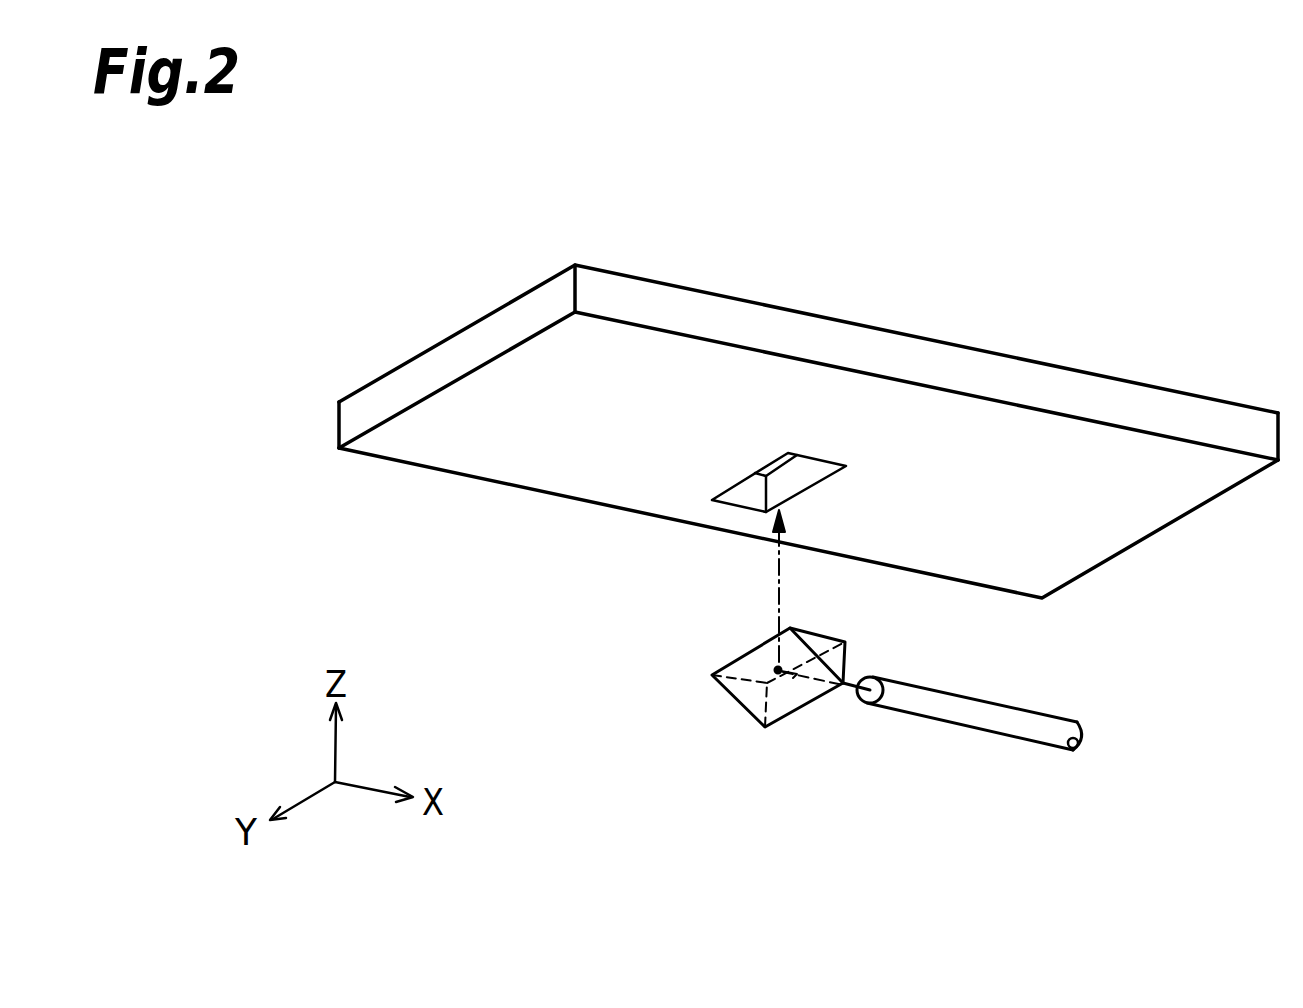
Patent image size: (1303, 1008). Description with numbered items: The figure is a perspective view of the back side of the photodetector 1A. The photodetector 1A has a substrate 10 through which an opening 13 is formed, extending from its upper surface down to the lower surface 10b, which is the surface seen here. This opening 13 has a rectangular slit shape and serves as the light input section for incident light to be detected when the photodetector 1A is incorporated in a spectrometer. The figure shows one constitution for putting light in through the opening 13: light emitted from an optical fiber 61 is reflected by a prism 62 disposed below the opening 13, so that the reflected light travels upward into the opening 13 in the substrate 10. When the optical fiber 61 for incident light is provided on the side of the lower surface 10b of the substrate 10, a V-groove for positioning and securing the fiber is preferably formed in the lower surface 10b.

The photodetector 1A is at (1005, 292).
The substrate 10 is at (732, 315).
The lower surface 10b is at (1110, 530).
The opening 13 is at (745, 495).
The optical fiber 61 is at (958, 707).
The prism 62 is at (745, 695).